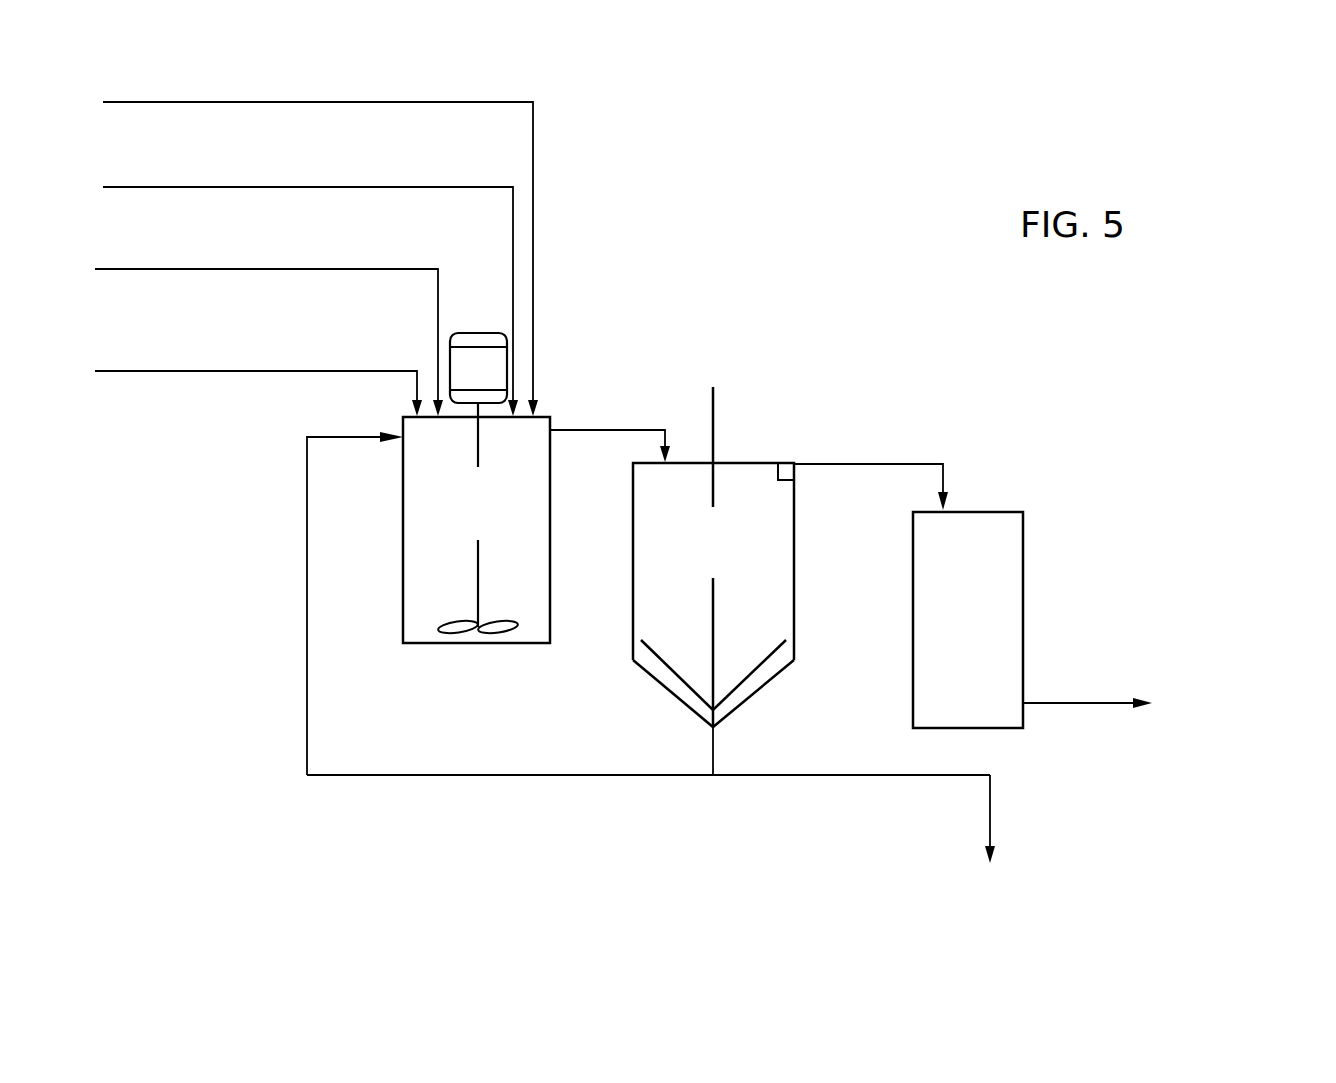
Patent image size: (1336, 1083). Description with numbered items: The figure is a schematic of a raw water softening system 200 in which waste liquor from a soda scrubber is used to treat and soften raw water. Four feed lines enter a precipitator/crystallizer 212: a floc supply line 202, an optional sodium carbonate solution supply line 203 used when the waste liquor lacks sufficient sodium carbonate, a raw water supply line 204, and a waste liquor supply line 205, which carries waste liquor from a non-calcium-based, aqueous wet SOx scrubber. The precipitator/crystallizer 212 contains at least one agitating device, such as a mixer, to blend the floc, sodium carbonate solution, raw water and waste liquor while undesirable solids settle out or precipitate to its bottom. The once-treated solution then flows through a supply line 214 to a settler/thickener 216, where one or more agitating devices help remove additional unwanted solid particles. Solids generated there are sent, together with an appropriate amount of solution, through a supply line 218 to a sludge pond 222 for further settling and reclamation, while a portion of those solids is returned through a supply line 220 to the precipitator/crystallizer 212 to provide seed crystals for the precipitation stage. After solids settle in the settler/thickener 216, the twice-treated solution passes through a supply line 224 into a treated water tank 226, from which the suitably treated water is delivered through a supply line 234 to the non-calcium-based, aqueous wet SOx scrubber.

The system 200 is at (812, 140).
The floc supply line 202 is at (428, 101).
The raw water supply line 204 is at (430, 186).
The waste liquor supply line 205 is at (208, 270).
The sodium carbonate solution supply line 203 is at (345, 371).
The precipitator/crystallizer 212 is at (408, 608).
The supply line 214 is at (588, 425).
The settler/thickener 216 is at (800, 600).
The supply line 218 is at (710, 745).
The supply line 220 is at (307, 647).
The sludge pond 222 is at (990, 813).
The supply line 224 is at (845, 460).
The treated water tank 226 is at (995, 508).
The supply line 234 is at (1083, 705).